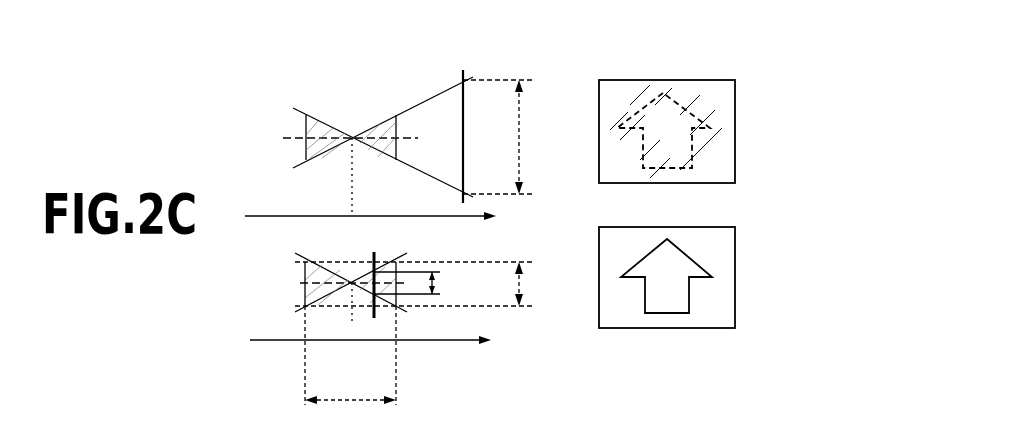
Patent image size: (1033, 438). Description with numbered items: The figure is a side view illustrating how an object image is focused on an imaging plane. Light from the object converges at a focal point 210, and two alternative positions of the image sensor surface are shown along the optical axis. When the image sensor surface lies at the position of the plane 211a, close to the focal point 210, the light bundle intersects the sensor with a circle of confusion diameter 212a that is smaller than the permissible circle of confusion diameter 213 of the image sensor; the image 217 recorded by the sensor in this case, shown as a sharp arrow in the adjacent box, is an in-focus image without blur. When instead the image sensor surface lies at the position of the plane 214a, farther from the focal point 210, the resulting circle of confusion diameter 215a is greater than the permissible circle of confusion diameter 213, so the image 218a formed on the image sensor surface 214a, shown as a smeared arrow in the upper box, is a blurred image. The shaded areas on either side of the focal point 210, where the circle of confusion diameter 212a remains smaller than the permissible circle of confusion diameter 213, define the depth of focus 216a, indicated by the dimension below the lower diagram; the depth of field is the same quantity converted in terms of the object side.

The focal point 210 is at (352, 282).
The plane 211a is at (378, 255).
The circle of confusion diameter 212a is at (436, 284).
The permissible circle of confusion diameter 213 is at (520, 283).
The plane 214a is at (463, 72).
The circle of confusion diameter 215a is at (558, 125).
The depth of focus 216a is at (350, 400).
The image 217 is at (690, 252).
The image 218a is at (690, 105).